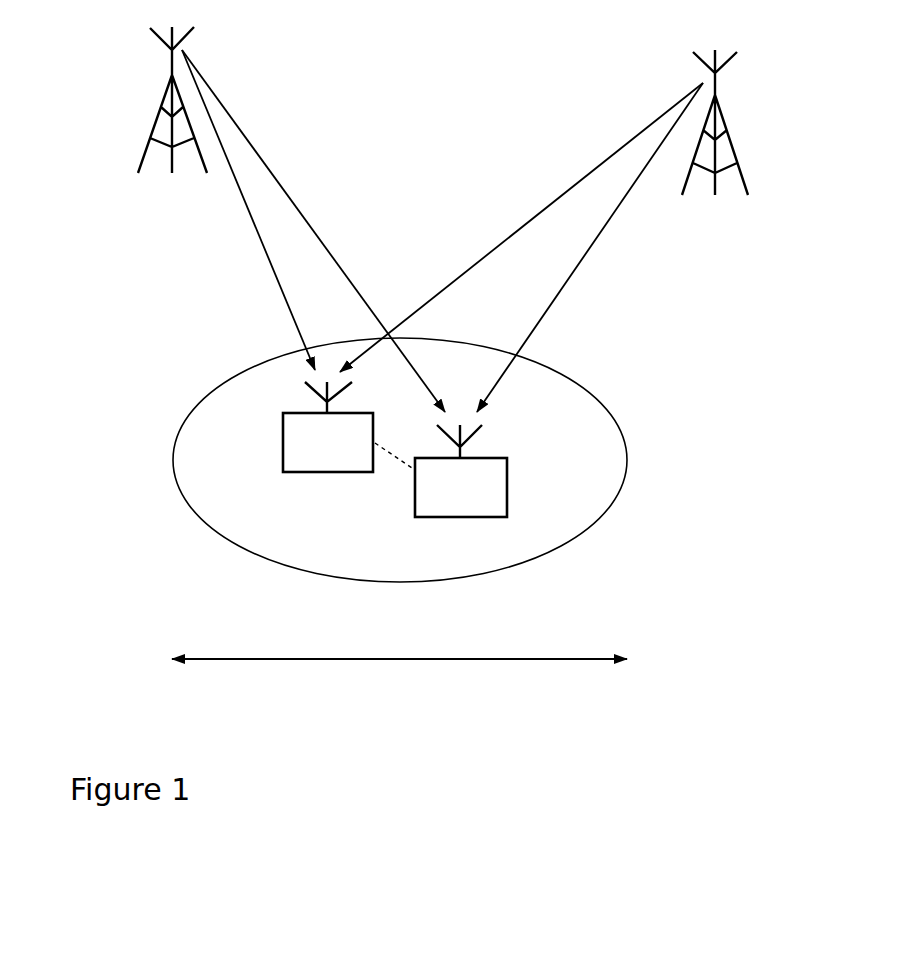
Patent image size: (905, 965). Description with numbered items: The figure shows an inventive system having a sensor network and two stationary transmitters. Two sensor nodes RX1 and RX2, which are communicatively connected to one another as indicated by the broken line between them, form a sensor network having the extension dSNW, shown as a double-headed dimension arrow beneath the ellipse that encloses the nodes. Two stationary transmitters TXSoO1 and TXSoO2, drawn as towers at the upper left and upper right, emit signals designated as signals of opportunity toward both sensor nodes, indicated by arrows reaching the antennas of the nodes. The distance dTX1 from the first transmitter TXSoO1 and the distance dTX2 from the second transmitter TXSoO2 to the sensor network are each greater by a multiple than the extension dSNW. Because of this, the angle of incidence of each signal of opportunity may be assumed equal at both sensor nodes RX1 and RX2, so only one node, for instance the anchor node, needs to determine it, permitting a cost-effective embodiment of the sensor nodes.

The stationary transmitter TXSoO1 is at (172, 125).
The stationary transmitter TXSoO2 is at (716, 149).
The sensor node RX1 is at (308, 429).
The sensor node RX2 is at (502, 474).
The distance from first transmitter to sensor network dTX1 is at (313, 231).
The distance from second transmitter to sensor network dTX2 is at (521, 247).
The extension of the sensor network dSNW is at (464, 601).